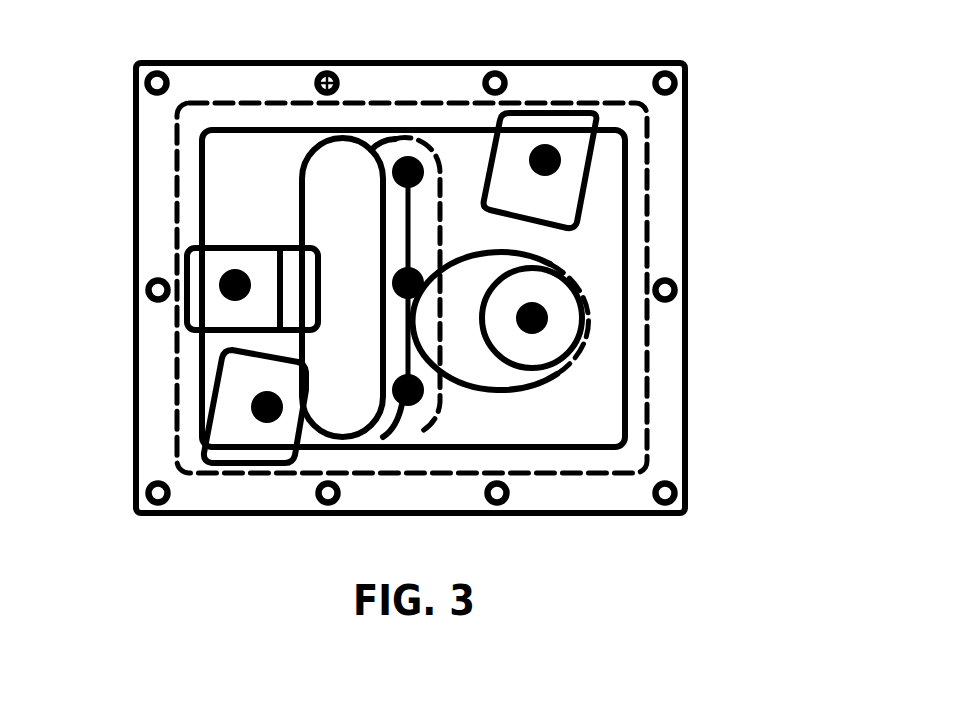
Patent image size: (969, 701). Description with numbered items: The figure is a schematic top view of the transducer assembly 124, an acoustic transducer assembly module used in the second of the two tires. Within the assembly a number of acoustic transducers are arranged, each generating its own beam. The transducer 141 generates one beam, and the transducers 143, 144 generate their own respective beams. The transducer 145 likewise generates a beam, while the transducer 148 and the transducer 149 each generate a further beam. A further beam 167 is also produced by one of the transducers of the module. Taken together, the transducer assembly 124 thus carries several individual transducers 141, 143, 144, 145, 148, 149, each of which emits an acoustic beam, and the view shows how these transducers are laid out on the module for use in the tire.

The transducer assembly 124 is at (687, 175).
The transducer 141 is at (538, 303).
The transducer 143 is at (408, 158).
The transducer 144 is at (412, 402).
The transducer 145 is at (226, 272).
The transducer 148 is at (258, 395).
The transducer 149 is at (548, 148).
The beam 167 is at (417, 297).